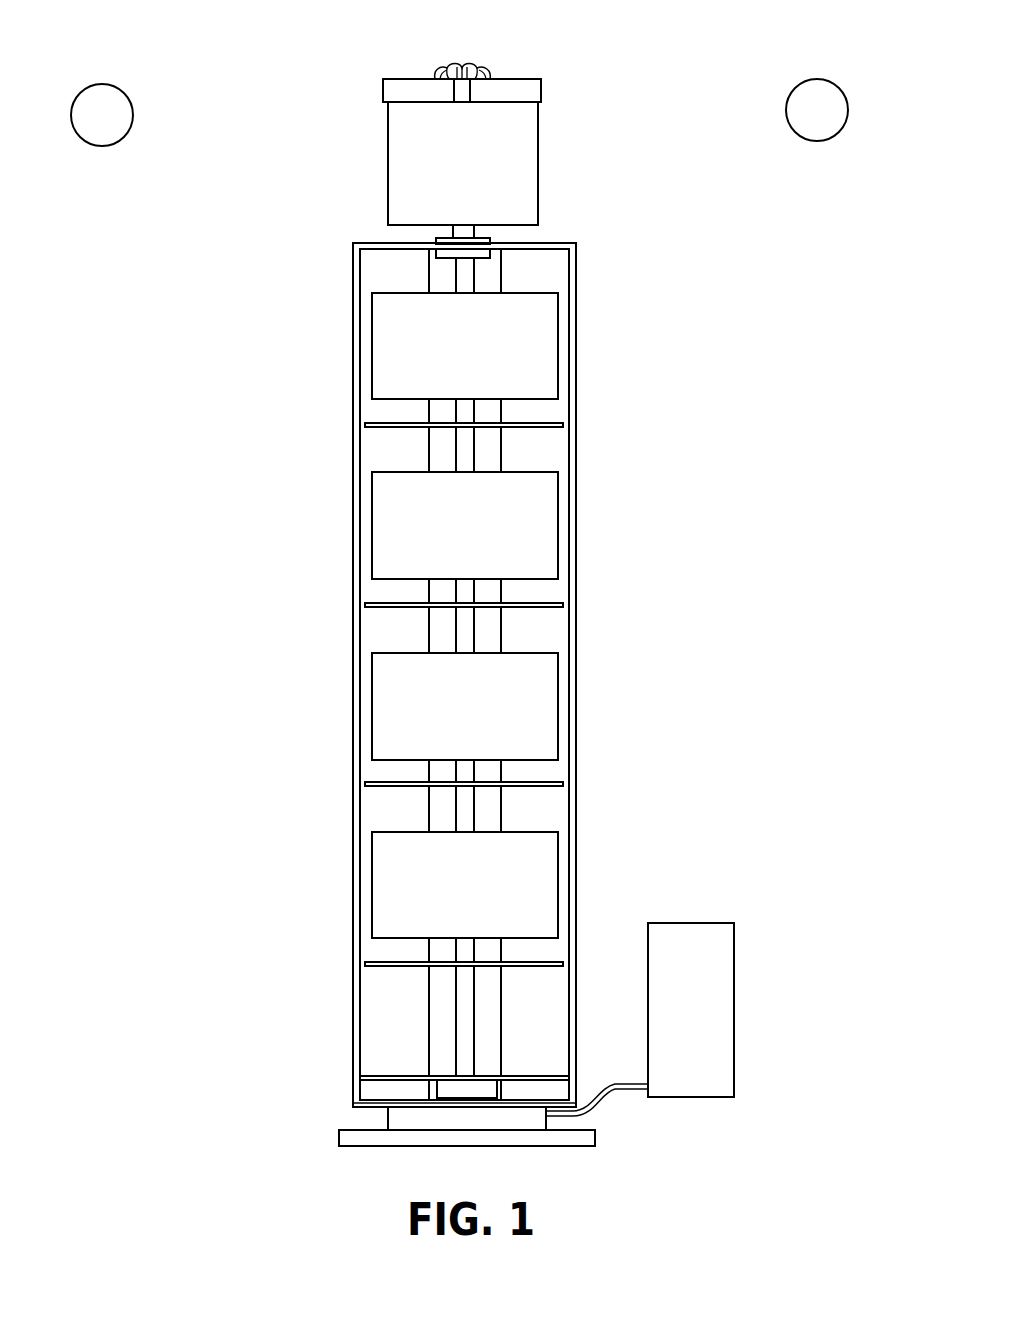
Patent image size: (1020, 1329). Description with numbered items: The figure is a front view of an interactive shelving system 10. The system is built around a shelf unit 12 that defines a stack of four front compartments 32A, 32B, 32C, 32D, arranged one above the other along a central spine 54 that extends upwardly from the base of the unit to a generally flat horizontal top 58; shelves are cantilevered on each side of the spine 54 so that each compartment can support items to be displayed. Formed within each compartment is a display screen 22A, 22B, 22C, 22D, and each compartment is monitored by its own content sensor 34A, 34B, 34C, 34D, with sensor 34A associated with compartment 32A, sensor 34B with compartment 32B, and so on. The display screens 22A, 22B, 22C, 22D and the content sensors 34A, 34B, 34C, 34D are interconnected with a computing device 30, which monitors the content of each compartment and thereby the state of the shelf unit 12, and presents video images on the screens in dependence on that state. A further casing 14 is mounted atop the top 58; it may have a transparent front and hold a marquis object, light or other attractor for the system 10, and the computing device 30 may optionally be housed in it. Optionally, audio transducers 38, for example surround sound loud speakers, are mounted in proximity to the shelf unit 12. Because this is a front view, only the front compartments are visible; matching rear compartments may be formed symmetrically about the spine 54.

The interactive shelving system 10 is at (190, 295).
The shelf unit 12 is at (577, 338).
The casing 14 is at (527, 158).
The display screen 22A is at (487, 362).
The display screen 22B is at (487, 541).
The display screen 22C is at (487, 721).
The display screen 22D is at (487, 902).
The computing device 30 is at (713, 1016).
The compartment 32A is at (544, 273).
The compartment 32B is at (547, 453).
The compartment 32C is at (547, 631).
The compartment 32D is at (547, 811).
The content sensor 34A is at (386, 449).
The content sensor 34B is at (386, 631).
The content sensor 34C is at (386, 811).
The content sensor 34D is at (386, 991).
The audio transducer 38 is at (102, 105).
The central spine 54 is at (430, 268).
The top 58 is at (560, 240).